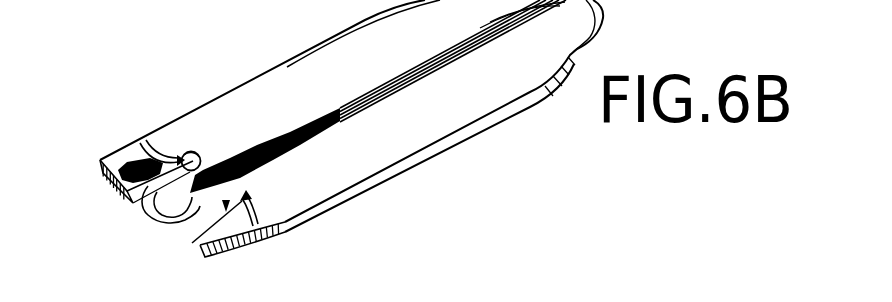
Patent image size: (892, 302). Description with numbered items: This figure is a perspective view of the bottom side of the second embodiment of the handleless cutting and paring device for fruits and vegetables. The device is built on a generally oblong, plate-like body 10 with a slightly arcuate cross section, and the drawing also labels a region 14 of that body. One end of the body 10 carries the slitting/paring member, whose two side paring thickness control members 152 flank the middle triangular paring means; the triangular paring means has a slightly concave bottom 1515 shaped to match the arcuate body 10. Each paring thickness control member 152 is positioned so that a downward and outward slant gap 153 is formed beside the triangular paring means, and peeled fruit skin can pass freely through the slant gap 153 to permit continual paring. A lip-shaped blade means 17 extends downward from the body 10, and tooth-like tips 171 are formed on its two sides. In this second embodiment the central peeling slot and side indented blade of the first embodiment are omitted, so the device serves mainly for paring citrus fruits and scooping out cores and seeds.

The body 10 is at (447, 154).
The raised body portion 14 is at (382, 70).
The paring thickness control member 152 is at (100, 160).
The lip-shaped blade means 17 is at (200, 158).
The tooth-like tip 171 is at (160, 148).
The concave bottom 1515 is at (173, 212).
The slant gap 153 is at (198, 207).